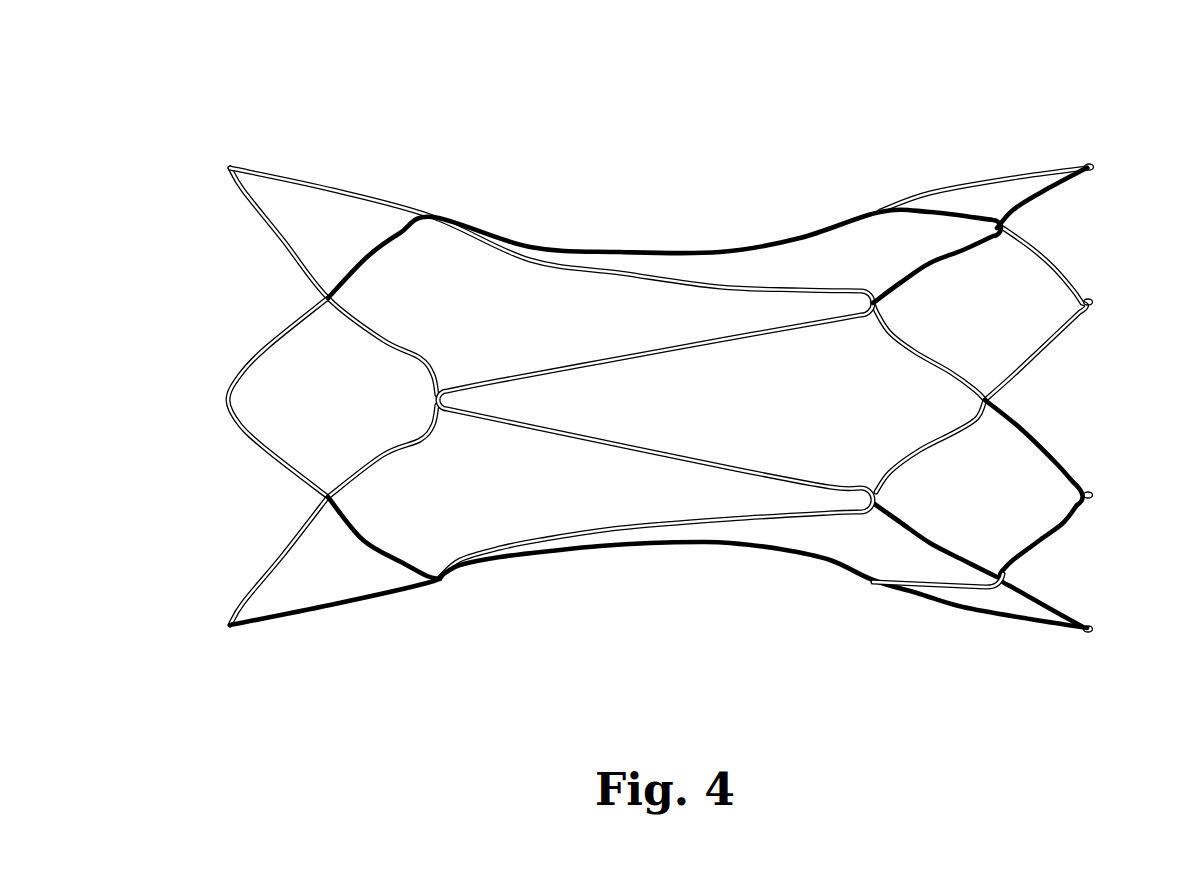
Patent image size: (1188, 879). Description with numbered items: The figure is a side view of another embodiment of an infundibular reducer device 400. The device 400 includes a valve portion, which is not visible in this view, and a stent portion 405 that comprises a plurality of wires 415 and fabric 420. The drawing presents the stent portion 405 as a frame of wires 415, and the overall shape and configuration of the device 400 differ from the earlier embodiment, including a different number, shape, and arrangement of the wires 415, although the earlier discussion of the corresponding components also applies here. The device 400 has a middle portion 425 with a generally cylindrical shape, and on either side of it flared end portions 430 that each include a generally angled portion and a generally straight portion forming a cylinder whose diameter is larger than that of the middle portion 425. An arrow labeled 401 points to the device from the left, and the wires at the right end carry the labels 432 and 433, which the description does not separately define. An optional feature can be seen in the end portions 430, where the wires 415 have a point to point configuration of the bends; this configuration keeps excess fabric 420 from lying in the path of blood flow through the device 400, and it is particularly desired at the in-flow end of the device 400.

The infundibular reducer device 400 is at (1010, 118).
The stent body 401 is at (176, 398).
The stent portion 405 is at (604, 563).
The wires 415 is at (530, 248).
The fabric 420 is at (822, 287).
The middle portion 425 is at (442, 652).
The flared end portions 430 is at (435, 652).
The end cell struts 432 is at (1000, 463).
The tip eyelet 433 is at (1093, 172).